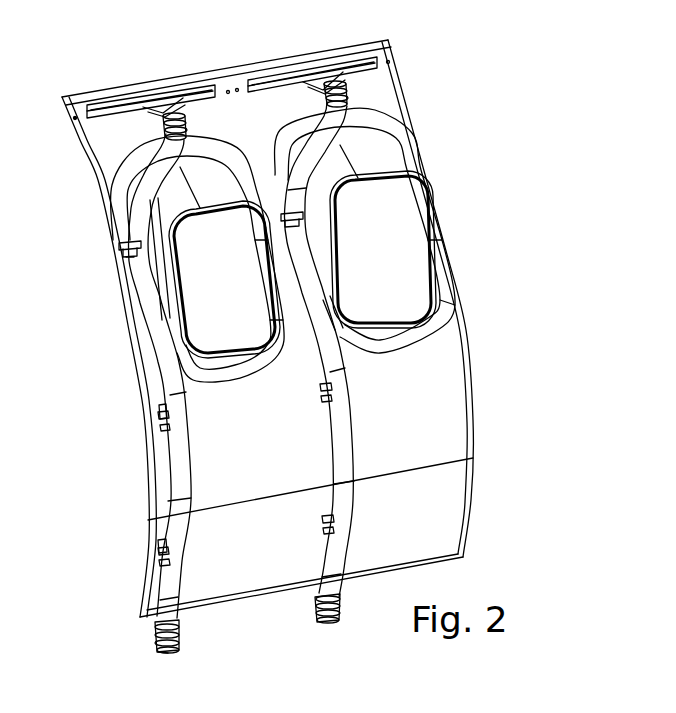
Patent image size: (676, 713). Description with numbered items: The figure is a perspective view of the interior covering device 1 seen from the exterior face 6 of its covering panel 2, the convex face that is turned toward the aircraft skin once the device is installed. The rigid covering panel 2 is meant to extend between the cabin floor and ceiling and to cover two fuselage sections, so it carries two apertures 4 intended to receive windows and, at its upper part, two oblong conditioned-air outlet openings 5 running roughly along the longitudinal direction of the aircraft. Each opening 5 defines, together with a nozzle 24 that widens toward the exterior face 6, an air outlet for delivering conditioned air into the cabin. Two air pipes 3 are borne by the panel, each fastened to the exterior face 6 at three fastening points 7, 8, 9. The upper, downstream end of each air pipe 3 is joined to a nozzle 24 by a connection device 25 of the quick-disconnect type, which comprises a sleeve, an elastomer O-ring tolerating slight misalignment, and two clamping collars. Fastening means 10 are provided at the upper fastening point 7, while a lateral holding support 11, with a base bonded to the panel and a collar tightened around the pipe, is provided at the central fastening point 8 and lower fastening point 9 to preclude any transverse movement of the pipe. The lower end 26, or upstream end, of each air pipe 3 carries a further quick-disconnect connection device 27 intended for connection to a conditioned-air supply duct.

The interior covering device 1 is at (460, 124).
The covering panel 2 is at (448, 373).
The air pipe 3 is at (178, 583).
The aperture 4 is at (207, 304).
The conditioned-air outlet opening 5 is at (119, 104).
The exterior face 6 is at (450, 431).
The upper fastening point 7 is at (119, 245).
The central fastening point 8 is at (159, 409).
The lower fastening point 9 is at (162, 544).
The fastening means 10 is at (125, 256).
The lateral holding support 11 is at (172, 419).
The nozzle 24 is at (170, 105).
The connection device 25 is at (162, 114).
The lower end 26 is at (152, 636).
The connection device 27 is at (180, 639).